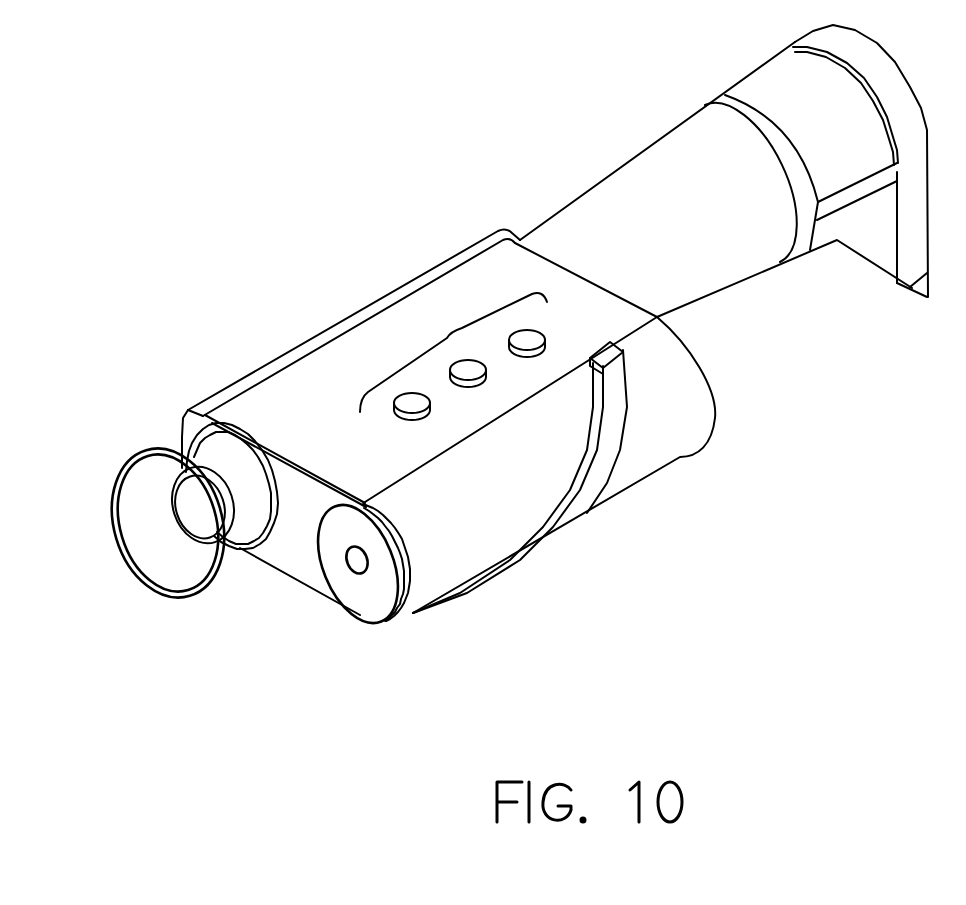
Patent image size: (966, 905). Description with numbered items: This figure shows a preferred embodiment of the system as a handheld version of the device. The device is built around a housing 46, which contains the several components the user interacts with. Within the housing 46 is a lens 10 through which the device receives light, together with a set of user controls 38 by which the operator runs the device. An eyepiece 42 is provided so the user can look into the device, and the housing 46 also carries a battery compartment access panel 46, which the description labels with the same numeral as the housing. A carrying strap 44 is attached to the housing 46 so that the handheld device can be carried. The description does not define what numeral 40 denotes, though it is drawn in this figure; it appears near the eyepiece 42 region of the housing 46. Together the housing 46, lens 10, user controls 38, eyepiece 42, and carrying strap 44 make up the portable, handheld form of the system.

The lens 10 is at (626, 161).
The user controls 38 is at (452, 333).
The eyepiece tube 40 is at (281, 560).
The eyepiece 42 is at (151, 552).
The carrying strap 44 is at (543, 547).
The housing 46 is at (370, 593).